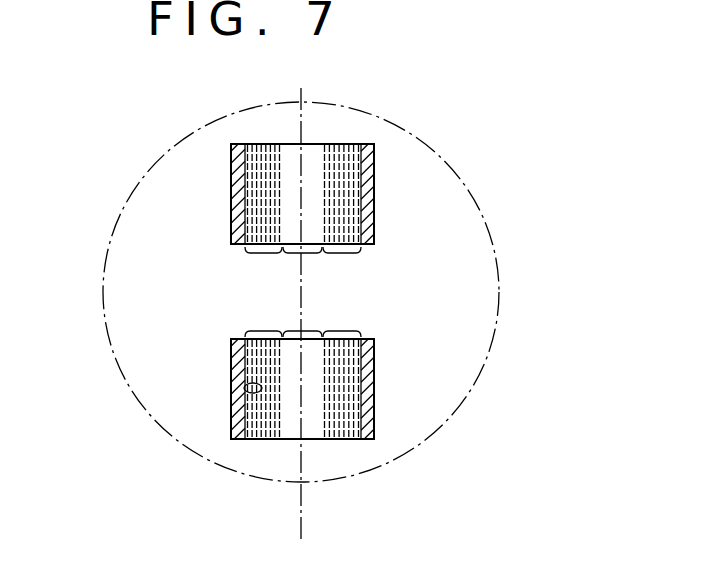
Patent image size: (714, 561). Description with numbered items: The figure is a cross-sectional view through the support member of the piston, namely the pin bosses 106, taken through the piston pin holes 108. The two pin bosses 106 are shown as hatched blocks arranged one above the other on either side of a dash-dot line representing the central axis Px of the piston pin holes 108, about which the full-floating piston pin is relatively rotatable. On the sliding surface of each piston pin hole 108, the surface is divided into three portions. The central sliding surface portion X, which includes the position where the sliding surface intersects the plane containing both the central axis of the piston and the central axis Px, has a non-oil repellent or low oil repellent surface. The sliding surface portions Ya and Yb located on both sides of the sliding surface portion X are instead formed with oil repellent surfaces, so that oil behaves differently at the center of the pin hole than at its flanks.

The piston pin boss 106 is at (375, 216).
The piston pin hole 108 is at (244, 388).
The central axis of the piston pin holes Px is at (300, 492).
The sliding surface portion X is at (302, 292).
The sliding surface portion Ya is at (341, 292).
The sliding surface portion Yb is at (262, 292).